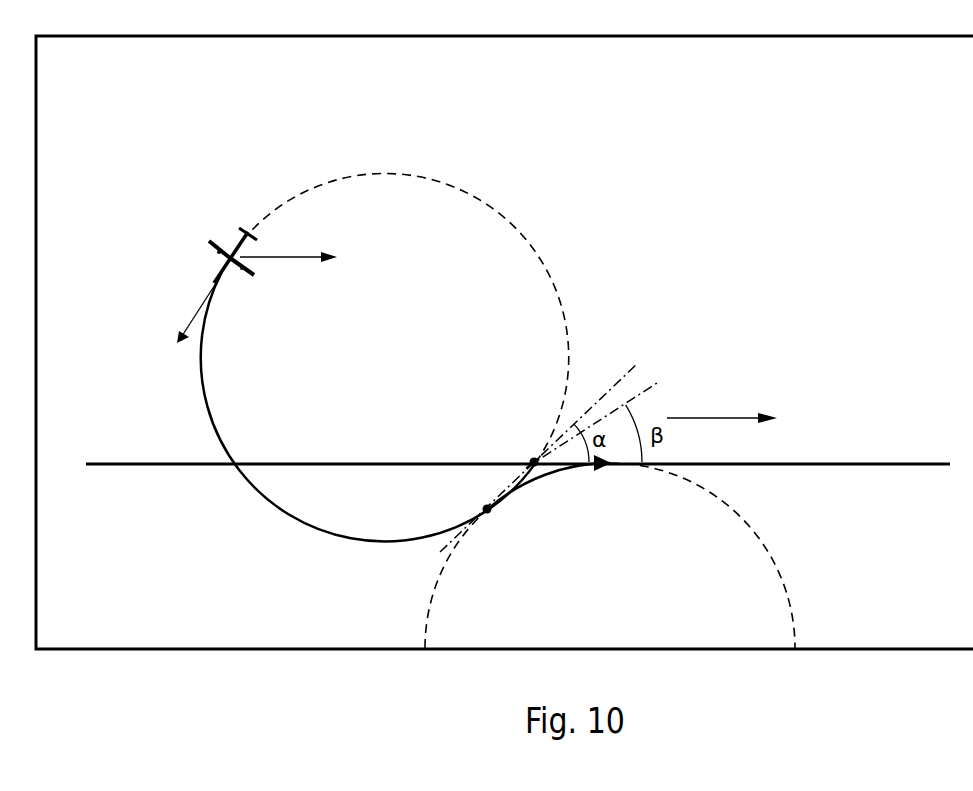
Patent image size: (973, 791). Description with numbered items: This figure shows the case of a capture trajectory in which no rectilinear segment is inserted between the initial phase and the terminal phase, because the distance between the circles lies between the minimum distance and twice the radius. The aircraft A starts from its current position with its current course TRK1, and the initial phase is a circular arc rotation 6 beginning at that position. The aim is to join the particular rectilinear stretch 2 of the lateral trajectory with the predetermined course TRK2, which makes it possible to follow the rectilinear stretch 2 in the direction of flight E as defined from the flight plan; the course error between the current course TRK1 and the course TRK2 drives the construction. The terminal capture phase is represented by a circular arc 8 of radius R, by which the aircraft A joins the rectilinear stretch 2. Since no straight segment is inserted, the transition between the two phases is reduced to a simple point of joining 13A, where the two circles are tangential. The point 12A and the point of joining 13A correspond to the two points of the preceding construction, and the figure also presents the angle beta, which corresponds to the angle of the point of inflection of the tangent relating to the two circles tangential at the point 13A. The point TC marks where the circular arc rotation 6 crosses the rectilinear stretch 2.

The rectilinear stretch 2 is at (336, 463).
The circular arc rotation 6 is at (184, 390).
The circular arc 8 is at (565, 496).
The point 12A is at (530, 459).
The point of joining 13A is at (487, 514).
The aircraft A is at (230, 250).
The current course of the aircraft TRK1 is at (200, 307).
The course TRK2 is at (273, 258).
The crossing point of circle and trajectory TC is at (229, 477).
The direction of flight E is at (720, 417).